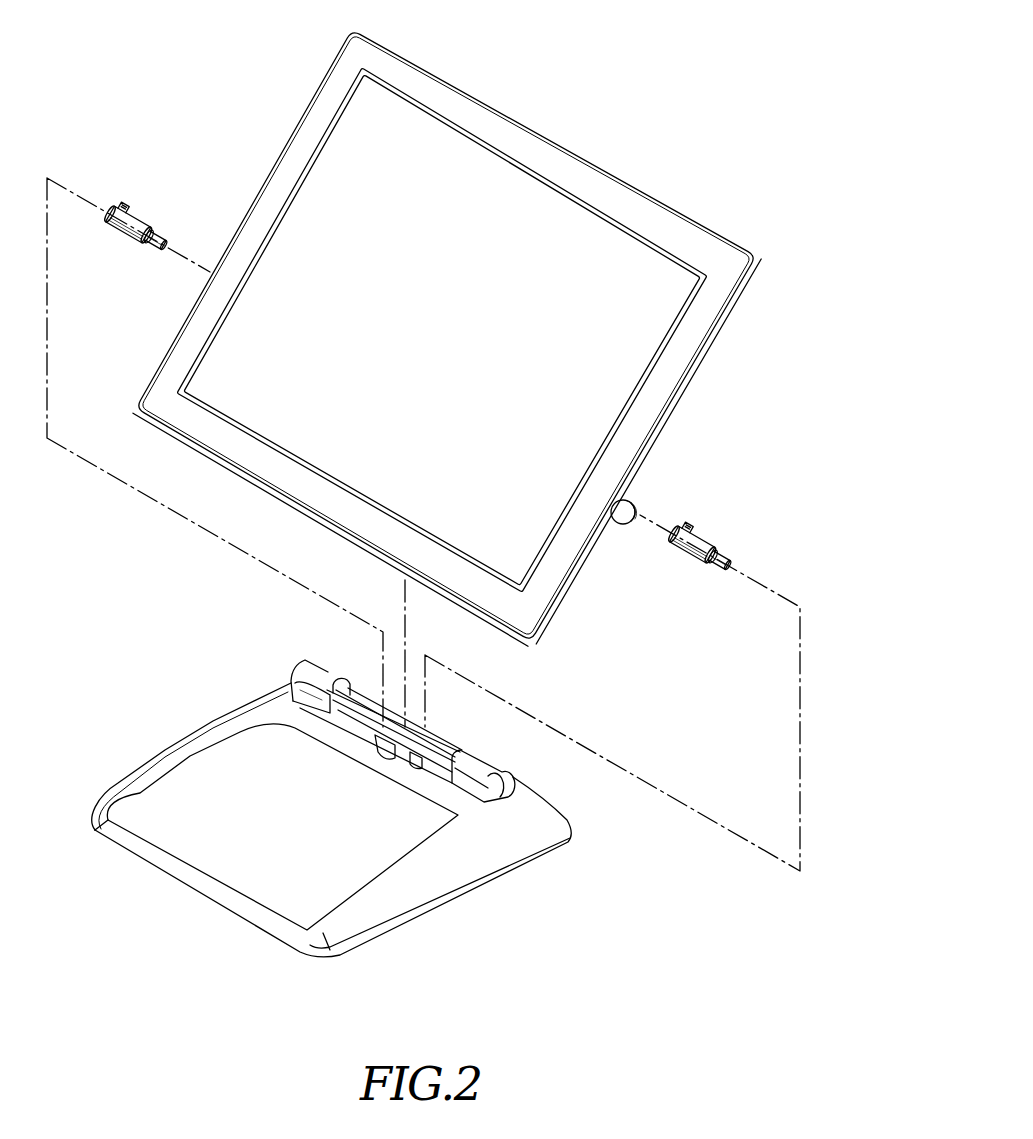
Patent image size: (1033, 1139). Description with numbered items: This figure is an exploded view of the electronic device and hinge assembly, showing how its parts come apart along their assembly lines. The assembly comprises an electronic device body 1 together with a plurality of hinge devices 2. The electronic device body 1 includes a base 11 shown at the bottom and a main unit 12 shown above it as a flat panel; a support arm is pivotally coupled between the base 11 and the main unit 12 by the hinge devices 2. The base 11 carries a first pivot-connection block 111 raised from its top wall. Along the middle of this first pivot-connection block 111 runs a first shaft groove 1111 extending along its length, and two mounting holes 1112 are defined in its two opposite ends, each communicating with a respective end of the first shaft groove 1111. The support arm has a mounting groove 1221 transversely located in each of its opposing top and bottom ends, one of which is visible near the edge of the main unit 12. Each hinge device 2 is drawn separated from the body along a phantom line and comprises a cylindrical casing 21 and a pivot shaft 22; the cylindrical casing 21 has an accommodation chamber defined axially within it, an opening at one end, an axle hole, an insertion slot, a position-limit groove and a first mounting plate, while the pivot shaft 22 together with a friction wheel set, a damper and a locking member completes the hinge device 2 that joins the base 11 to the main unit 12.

The electronic device body 1 is at (331, 793).
The base 11 is at (228, 753).
The first pivot-connection block 111 is at (306, 668).
The first shaft groove 1111 is at (325, 711).
The mounting holes 1112 is at (338, 680).
The main unit 12 is at (276, 188).
The mounting groove 1221 is at (623, 524).
The hinge devices 2 is at (435, 418).
The cylindrical casing 21 is at (703, 546).
The pivot shaft 22 is at (683, 524).